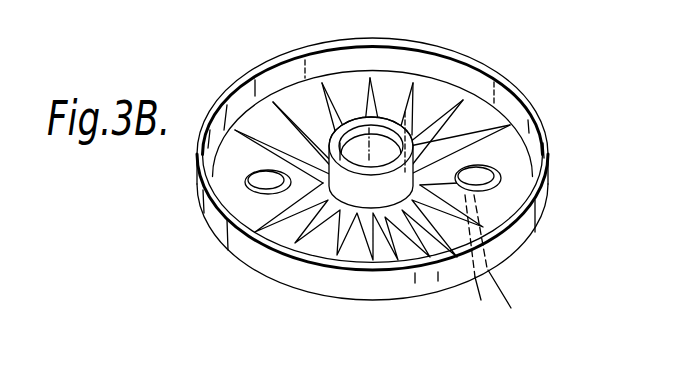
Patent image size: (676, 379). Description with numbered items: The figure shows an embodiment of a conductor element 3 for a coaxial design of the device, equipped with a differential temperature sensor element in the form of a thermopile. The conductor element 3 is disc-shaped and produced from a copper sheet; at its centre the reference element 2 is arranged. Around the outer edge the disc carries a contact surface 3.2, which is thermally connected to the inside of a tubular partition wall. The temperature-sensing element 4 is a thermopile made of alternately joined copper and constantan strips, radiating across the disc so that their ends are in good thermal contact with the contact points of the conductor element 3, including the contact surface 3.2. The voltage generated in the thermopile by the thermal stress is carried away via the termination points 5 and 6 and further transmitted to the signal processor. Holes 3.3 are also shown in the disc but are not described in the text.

The reference element 2 is at (373, 199).
The conductor element 3 is at (388, 96).
The contact surface 3.2 is at (452, 54).
The fastening holes 3.3 is at (262, 188).
The temperature-sensing element 4 is at (495, 127).
The termination point 5 is at (511, 306).
The termination point 6 is at (481, 300).